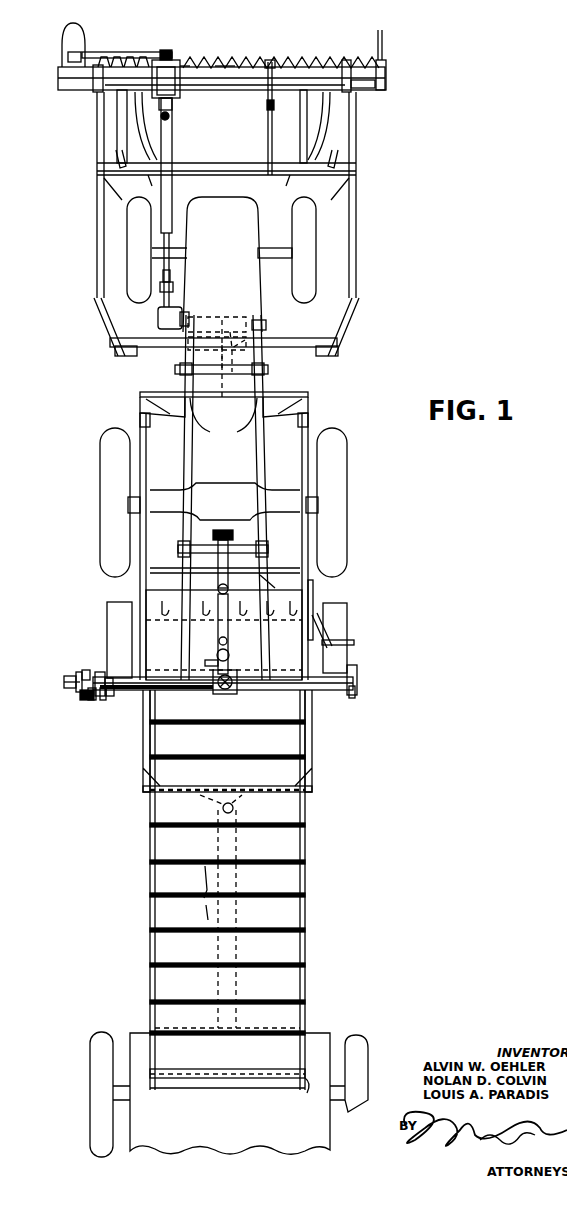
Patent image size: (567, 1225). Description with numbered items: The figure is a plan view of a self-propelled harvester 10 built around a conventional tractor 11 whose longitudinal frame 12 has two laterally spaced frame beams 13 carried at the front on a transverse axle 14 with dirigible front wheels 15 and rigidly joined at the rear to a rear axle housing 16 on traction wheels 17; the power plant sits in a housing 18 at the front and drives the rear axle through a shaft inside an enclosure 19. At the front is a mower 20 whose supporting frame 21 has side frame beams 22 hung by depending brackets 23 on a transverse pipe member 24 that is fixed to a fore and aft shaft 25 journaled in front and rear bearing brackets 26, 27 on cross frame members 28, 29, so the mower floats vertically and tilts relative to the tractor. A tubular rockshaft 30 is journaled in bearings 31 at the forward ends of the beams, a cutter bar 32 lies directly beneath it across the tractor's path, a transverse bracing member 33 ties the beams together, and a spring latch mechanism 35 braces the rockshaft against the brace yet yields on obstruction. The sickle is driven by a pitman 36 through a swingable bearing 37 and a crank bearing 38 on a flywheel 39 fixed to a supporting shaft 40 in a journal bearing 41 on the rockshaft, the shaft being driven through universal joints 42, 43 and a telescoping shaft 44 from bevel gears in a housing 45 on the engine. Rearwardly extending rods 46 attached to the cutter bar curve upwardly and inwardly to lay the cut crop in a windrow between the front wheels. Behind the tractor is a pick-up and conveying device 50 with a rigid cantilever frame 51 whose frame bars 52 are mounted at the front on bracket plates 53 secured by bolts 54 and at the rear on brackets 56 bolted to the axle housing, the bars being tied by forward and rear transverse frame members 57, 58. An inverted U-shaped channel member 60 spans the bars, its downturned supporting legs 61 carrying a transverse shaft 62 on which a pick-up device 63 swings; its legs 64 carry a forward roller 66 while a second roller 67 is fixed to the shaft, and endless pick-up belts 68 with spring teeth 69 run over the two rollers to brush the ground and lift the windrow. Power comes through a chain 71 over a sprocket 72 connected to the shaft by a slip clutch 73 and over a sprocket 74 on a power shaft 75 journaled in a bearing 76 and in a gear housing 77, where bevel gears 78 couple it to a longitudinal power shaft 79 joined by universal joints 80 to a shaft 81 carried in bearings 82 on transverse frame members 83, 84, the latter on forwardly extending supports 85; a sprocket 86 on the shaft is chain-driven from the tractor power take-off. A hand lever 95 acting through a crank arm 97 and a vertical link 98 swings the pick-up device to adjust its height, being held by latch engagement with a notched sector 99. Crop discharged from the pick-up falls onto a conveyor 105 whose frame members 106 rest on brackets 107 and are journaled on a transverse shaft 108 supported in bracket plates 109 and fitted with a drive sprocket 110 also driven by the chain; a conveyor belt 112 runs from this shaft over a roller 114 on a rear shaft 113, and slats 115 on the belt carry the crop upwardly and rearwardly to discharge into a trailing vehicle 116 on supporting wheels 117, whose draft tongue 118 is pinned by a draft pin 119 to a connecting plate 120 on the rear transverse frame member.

The harvester 10 is at (64, 228).
The tractor 11 is at (214, 192).
The frame 12 is at (162, 286).
The frame beams 13 is at (184, 447).
The transverse axle 14 is at (270, 248).
The front wheels 15 is at (135, 210).
The rear axle housing 16 is at (228, 506).
The traction wheels 17 is at (110, 441).
The housing 18 is at (228, 248).
The enclosure 19 is at (228, 466).
The mower 20 is at (398, 83).
The supporting frame 21 is at (366, 164).
The frame beams 22 is at (98, 180).
The depending brackets 23 is at (118, 340).
The pipe member 24 is at (149, 343).
The shaft 25 is at (240, 322).
The front bearing bracket 26 is at (215, 317).
The rear bearing bracket 27 is at (224, 393).
The cross frame member 28 is at (262, 320).
The cross frame member 29 is at (266, 369).
The rockshaft 30 is at (368, 88).
The bearings 31 is at (343, 60).
The cutter bar 32 is at (262, 88).
The bracing member 33 is at (223, 163).
The spring latch mechanism 35 is at (264, 120).
The pitman 36 is at (118, 57).
The swingable bearing 37 is at (62, 50).
The crank bearing 38 is at (165, 54).
The flywheel 39 is at (186, 60).
The supporting shaft 40 is at (174, 105).
The journal bearing 41 is at (230, 62).
The universal joint 42 is at (170, 117).
The universal joint 43 is at (185, 289).
The telescoping shaft 44 is at (205, 166).
The housing 45 is at (160, 316).
The rods 46 is at (132, 120).
The pick-up and conveying device 50 is at (94, 764).
The frame 51 is at (135, 760).
The frame bars 52 is at (140, 422).
The bracket plates 53 is at (165, 410).
The bolts 54 is at (250, 418).
The brackets 56 is at (130, 505).
The transverse frame member 57 is at (278, 396).
The transverse frame member 58 is at (242, 786).
The channel member 60 is at (290, 690).
The supporting legs 61 is at (97, 675).
The shaft 62 is at (105, 676).
The pick-up device 63 is at (104, 596).
The legs 64 is at (118, 616).
The roller 66 is at (174, 620).
The roller 67 is at (272, 672).
The pick-up belts 68 is at (186, 612).
The spring teeth 69 is at (226, 614).
The chain 71 is at (78, 686).
The sprocket 72 is at (82, 672).
The slip clutch 73 is at (52, 673).
The sprocket 74 is at (92, 701).
The power shaft 75 is at (165, 692).
The bearing 76 is at (112, 696).
The gear housing 77 is at (213, 692).
The bevel gears 78 is at (231, 696).
The power shaft 79 is at (205, 663).
The universal joints 80 is at (218, 590).
The shaft 81 is at (229, 594).
The bearings 82 is at (214, 563).
The frame member 83 is at (278, 575).
The frame member 84 is at (250, 545).
The supports 85 is at (178, 545).
The sprocket 86 is at (218, 530).
The hand lever 95 is at (312, 628).
The crank arm 97 is at (335, 636).
The link 98 is at (354, 643).
The notched sector 99 is at (314, 592).
The conveyor 105 is at (138, 889).
The frame members 106 is at (156, 974).
The brackets 107 is at (143, 788).
The shaft 108 is at (330, 692).
The bracket plates 109 is at (105, 700).
The drive sprocket 110 is at (86, 700).
The conveyor belt 112 is at (288, 915).
The shaft 113 is at (306, 1093).
The roller 114 is at (222, 1069).
The slats 115 is at (205, 900).
The trailing vehicle 116 is at (243, 1125).
The supporting wheels 117 is at (95, 1040).
The draft tongue 118 is at (238, 942).
The draft pin 119 is at (238, 828).
The connecting plate 120 is at (242, 807).